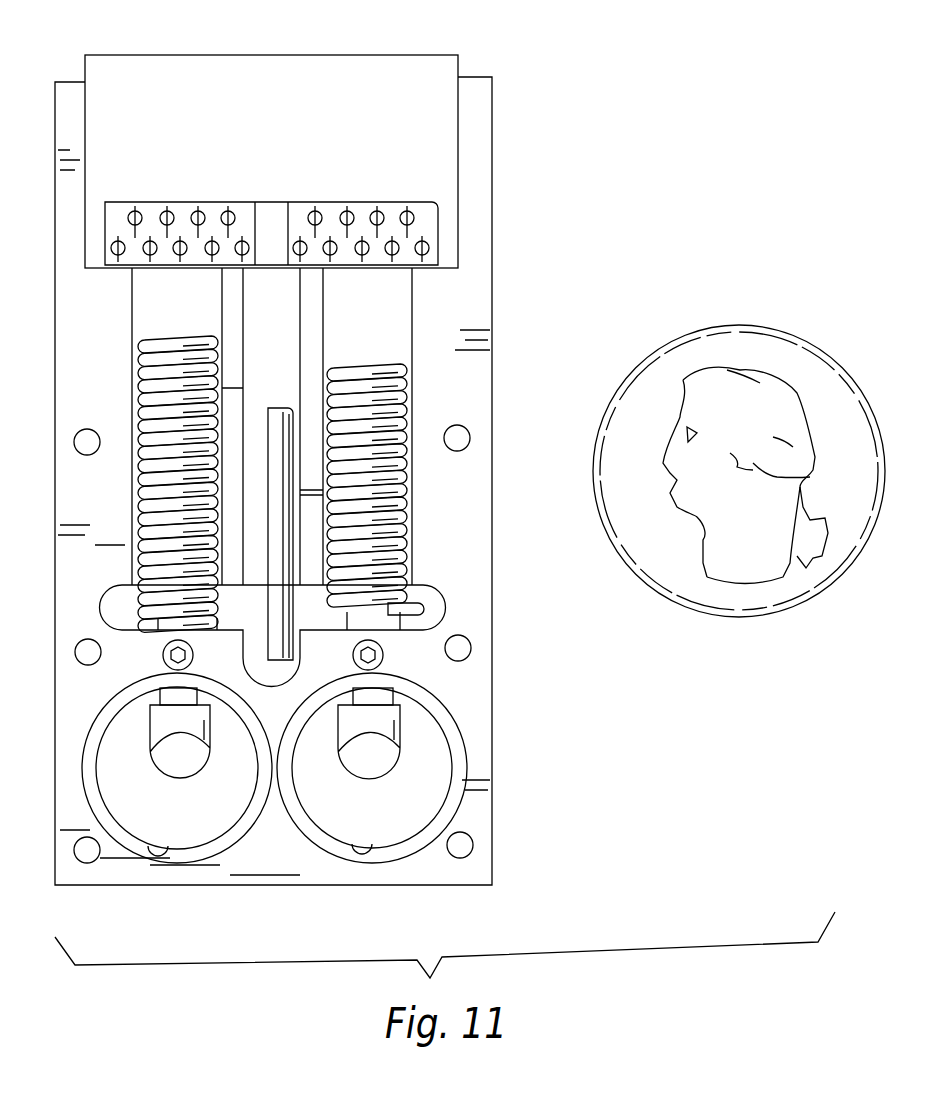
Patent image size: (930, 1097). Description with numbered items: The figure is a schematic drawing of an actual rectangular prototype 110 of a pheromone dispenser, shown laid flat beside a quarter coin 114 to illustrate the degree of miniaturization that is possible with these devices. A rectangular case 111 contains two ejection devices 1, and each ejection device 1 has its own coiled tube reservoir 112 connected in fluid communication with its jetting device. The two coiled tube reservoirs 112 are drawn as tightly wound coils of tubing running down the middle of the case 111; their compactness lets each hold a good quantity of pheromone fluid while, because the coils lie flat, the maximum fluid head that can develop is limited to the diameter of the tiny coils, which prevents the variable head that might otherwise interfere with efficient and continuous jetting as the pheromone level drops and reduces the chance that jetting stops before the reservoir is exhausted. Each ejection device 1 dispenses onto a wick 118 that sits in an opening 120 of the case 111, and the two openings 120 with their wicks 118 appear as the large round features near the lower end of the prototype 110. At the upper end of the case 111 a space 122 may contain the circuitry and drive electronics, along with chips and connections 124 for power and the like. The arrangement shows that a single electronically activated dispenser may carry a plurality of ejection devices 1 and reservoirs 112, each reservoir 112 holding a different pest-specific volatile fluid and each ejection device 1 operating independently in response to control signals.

The ejection device 1 is at (90, 563).
The rectangular prototype 110 is at (660, 60).
The rectangular case 111 is at (492, 262).
The coiled tube reservoir 112 is at (140, 425).
The quarter coin 114 is at (813, 343).
The wick 118 is at (155, 762).
The opening 120 is at (163, 848).
The space 122 is at (271, 161).
The connections 124 is at (162, 212).